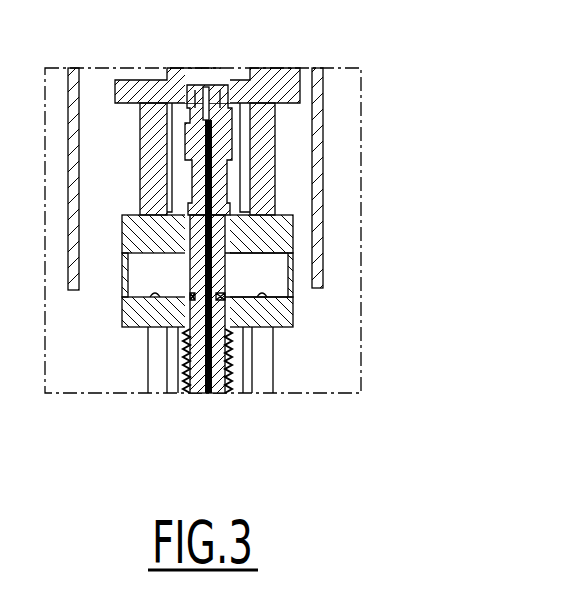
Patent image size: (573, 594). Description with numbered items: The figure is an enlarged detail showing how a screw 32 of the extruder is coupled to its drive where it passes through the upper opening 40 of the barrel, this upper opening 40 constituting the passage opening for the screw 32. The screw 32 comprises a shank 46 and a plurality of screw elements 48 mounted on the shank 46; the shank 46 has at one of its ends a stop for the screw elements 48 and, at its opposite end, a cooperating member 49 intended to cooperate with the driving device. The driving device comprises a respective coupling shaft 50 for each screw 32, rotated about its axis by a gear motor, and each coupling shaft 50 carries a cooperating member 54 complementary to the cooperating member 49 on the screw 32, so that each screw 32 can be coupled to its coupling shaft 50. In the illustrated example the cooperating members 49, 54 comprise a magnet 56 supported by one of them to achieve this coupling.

The screw 32 is at (218, 410).
The upper opening 40 is at (168, 310).
The shank 46 is at (272, 345).
The screw elements 48 is at (186, 371).
The cooperating member 49 is at (238, 286).
The coupling shaft 50 is at (240, 195).
The cooperating member 54 is at (250, 212).
The magnet 56 is at (200, 278).